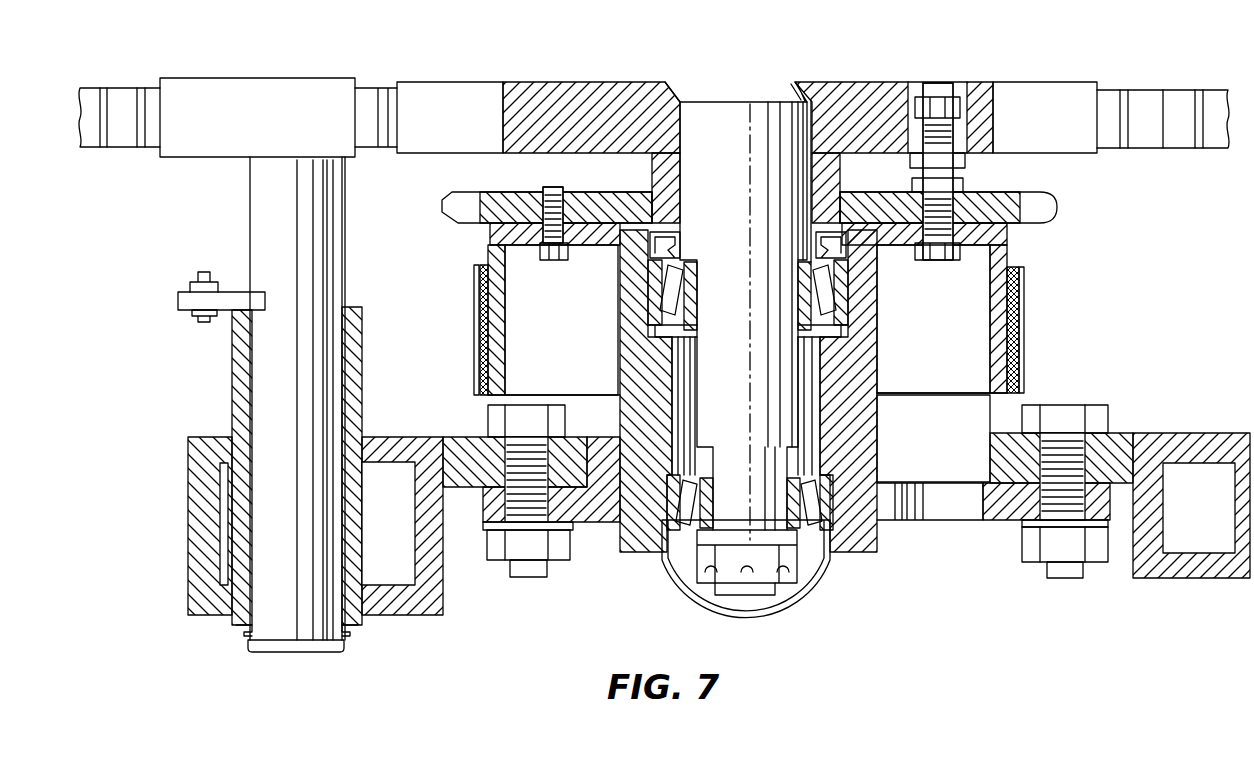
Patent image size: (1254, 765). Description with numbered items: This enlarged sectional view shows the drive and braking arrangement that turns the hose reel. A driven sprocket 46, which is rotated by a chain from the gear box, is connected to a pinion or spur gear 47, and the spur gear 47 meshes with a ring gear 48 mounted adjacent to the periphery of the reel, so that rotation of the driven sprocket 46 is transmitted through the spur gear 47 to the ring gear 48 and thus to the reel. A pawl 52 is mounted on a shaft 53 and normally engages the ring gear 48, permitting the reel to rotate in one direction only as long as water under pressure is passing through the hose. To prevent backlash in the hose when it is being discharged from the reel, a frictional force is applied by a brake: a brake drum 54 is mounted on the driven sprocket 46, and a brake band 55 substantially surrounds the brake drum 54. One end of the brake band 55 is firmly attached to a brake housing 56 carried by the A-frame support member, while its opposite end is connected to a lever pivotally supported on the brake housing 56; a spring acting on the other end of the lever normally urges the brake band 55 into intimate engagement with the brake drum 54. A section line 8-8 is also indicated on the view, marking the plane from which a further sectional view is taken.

The driven sprocket 46 is at (452, 212).
The spur gear 47 is at (597, 97).
The ring gear 48 is at (1148, 97).
The pawl 52 is at (247, 90).
The shaft 53 is at (262, 192).
The brake drum 54 is at (489, 298).
The brake band 55 is at (477, 340).
The brake housing 56 is at (1007, 508).
The section line 8- 8 is at (175, 320).